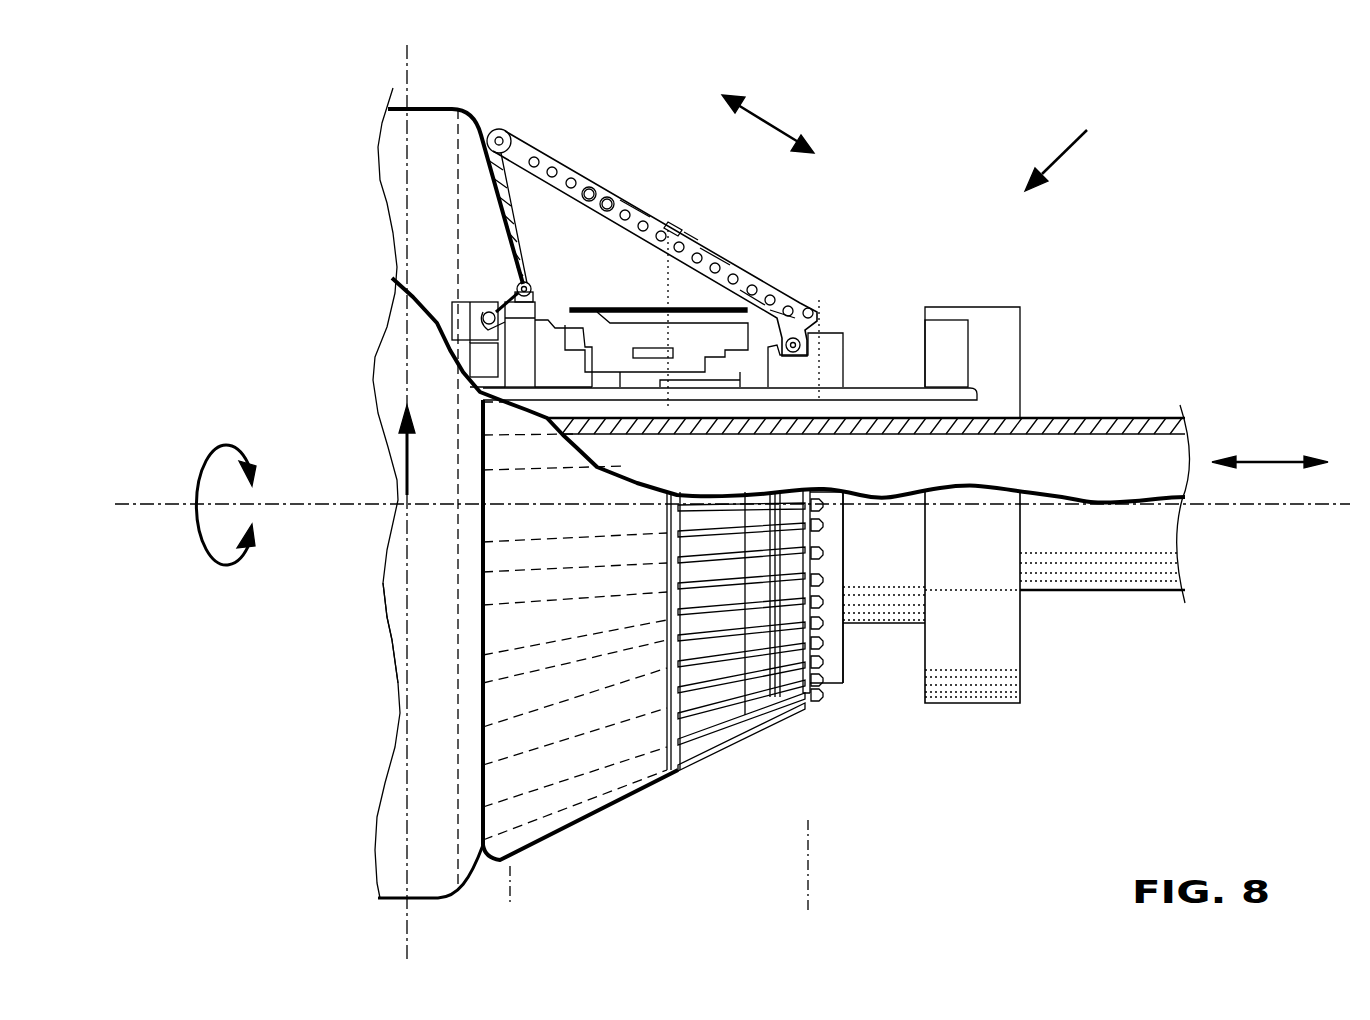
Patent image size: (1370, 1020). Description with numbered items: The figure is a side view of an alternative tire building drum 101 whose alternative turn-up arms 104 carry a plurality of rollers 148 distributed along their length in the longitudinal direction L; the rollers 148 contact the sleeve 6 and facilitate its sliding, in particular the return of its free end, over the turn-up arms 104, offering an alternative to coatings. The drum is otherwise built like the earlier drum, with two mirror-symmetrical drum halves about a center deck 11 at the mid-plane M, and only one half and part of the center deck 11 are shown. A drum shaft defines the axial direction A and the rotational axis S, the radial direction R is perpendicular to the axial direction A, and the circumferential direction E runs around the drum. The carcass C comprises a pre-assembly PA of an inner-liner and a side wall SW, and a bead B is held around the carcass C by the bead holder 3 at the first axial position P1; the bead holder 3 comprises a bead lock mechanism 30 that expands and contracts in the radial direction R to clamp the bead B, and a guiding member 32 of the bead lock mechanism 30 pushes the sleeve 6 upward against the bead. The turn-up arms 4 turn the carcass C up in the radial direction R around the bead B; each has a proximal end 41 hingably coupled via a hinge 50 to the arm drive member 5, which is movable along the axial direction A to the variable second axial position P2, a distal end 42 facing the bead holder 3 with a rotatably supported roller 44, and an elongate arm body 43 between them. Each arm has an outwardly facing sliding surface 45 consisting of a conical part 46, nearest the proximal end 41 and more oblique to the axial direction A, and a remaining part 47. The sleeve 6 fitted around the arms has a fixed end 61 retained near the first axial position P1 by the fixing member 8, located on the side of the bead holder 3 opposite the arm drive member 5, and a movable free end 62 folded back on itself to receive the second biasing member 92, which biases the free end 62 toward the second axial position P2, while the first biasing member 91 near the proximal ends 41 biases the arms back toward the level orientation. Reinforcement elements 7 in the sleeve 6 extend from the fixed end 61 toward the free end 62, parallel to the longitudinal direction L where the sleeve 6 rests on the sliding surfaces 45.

The alternative tire building drum 101 is at (1077, 141).
The center deck 11 is at (393, 194).
The bead holder 3 is at (520, 338).
The bead lock mechanism 30 is at (868, 504).
The turn-up arms 4 is at (745, 692).
The arm drive member 5 is at (838, 353).
The sleeve 6 is at (650, 212).
The reinforcement elements 7 is at (560, 600).
The fixing member 8 is at (465, 340).
The guiding member 32 is at (487, 300).
The proximal end 41 is at (803, 345).
The distal end 42 is at (535, 147).
The elongate arm body 43 is at (740, 268).
The roller 44 is at (497, 127).
The sliding surface 45 is at (735, 282).
The conical part 46 is at (765, 292).
The remaining part 47 is at (570, 178).
The hinge 50 is at (820, 333).
The fixed end 61 is at (470, 312).
The free end 62 is at (676, 222).
The first biasing member 91 is at (808, 318).
The second biasing member 92 is at (690, 238).
The alternative turn-up arms 104 is at (790, 306).
The rollers 148 is at (612, 194).
The mid-plane M is at (419, 502).
The rotational axis S is at (721, 505).
The circumferential direction E is at (234, 512).
The radial direction R is at (414, 450).
The longitudinal direction L is at (768, 120).
The axial direction A is at (1270, 440).
The carcass C is at (391, 640).
The side wall SW is at (531, 240).
The bead B is at (531, 285).
The pre-assembly PA is at (441, 893).
The first axial position P1 is at (507, 909).
The second axial position P2 is at (811, 885).